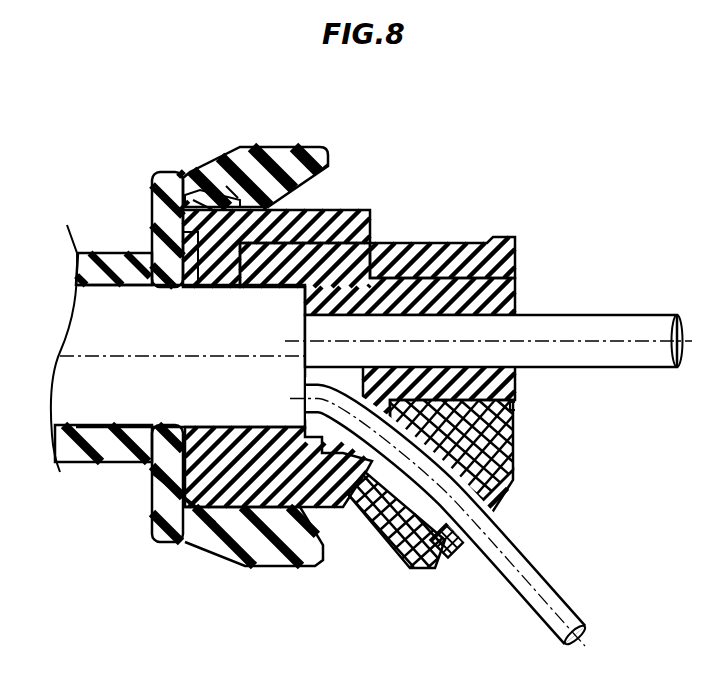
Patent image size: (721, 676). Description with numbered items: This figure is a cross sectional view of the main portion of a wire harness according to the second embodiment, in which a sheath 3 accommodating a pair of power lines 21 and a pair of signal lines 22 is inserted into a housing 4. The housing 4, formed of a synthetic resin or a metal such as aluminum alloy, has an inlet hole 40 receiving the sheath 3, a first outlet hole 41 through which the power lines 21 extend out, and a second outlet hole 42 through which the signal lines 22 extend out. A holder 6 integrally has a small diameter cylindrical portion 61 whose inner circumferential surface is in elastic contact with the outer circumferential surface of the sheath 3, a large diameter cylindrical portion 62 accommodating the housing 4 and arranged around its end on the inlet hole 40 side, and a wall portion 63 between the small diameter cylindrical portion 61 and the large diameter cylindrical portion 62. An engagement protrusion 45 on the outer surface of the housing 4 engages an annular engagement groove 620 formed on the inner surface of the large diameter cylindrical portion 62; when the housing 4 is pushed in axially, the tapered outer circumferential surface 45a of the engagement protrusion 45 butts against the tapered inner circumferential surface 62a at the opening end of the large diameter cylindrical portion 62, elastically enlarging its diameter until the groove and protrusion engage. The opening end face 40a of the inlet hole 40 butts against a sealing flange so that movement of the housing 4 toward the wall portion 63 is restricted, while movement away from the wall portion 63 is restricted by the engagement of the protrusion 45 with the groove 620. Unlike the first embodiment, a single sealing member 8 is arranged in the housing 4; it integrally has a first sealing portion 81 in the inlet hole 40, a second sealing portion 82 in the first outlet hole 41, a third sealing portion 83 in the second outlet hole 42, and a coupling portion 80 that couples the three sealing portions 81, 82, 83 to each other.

The sheath 3 is at (72, 385).
The housing 4 is at (466, 216).
The holder 6 is at (152, 555).
The sealing member 8 is at (520, 391).
The power lines 21 is at (622, 315).
The signal lines 22 is at (558, 593).
The inlet hole 40 is at (240, 523).
The opening end face 40a is at (187, 493).
The first outlet hole 41 is at (436, 283).
The second outlet hole 42 is at (397, 520).
The engagement protrusion 45 is at (227, 190).
The tapered outer circumferential surface 45a is at (213, 198).
The small diameter cylindrical portion 61 is at (110, 455).
The large diameter cylindrical portion 62 is at (288, 150).
The tapered inner circumferential surface 62a is at (323, 178).
The wall portion 63 is at (157, 203).
The coupling portion 80 is at (340, 290).
The first sealing portion 81 is at (181, 247).
The second sealing portion 82 is at (470, 300).
The third sealing portion 83 is at (455, 556).
The engagement groove 620 is at (231, 182).